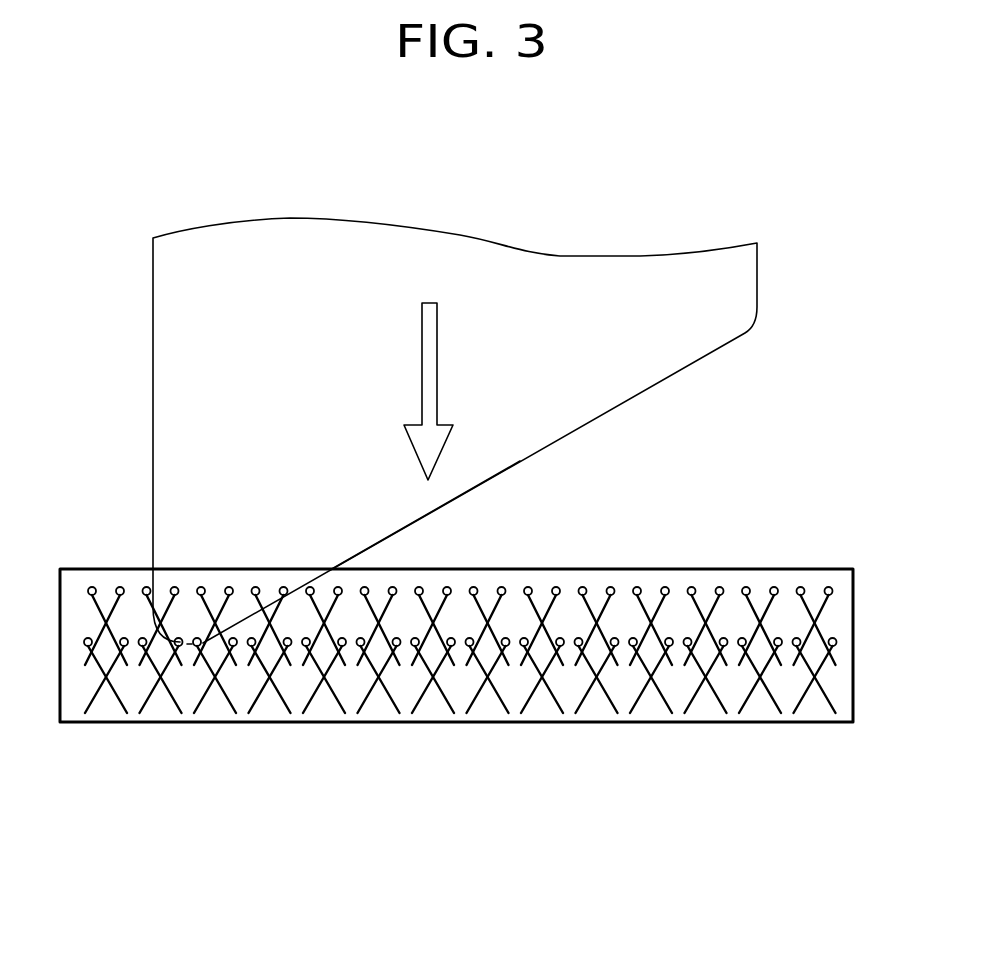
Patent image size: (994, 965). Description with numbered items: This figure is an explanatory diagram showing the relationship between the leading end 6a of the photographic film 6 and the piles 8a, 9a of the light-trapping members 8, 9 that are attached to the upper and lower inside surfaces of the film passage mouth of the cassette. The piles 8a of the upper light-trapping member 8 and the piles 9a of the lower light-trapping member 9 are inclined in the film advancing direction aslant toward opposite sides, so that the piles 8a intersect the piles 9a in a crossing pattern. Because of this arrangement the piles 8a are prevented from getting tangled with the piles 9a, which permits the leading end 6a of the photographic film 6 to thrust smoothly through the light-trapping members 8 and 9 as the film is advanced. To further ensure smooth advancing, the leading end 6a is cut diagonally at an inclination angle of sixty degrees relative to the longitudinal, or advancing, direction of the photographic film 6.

The photographic film 6 is at (457, 192).
The leading end 6a is at (500, 472).
The upper light-trapping member 8 is at (456, 707).
The lower light-trapping member 9 is at (456, 645).
The piles of the upper light-trapping member 8a is at (250, 703).
The piles of the lower light-trapping member 9a is at (395, 703).